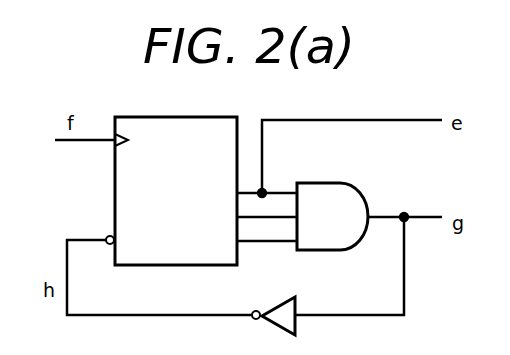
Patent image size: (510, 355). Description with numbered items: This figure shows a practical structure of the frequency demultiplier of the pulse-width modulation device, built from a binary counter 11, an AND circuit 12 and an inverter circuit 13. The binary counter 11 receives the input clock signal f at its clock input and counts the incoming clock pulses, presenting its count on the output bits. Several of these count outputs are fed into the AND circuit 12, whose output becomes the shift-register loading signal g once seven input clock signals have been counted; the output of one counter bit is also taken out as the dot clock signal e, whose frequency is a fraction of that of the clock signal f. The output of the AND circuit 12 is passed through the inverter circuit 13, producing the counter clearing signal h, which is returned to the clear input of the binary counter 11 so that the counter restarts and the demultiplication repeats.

The binary counter 11 is at (196, 117).
The AND circuit 12 is at (364, 197).
The inverter circuit 13 is at (296, 306).